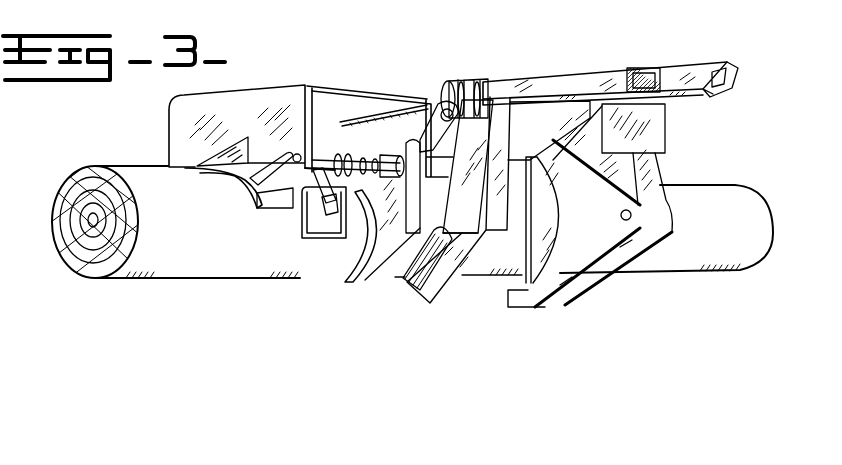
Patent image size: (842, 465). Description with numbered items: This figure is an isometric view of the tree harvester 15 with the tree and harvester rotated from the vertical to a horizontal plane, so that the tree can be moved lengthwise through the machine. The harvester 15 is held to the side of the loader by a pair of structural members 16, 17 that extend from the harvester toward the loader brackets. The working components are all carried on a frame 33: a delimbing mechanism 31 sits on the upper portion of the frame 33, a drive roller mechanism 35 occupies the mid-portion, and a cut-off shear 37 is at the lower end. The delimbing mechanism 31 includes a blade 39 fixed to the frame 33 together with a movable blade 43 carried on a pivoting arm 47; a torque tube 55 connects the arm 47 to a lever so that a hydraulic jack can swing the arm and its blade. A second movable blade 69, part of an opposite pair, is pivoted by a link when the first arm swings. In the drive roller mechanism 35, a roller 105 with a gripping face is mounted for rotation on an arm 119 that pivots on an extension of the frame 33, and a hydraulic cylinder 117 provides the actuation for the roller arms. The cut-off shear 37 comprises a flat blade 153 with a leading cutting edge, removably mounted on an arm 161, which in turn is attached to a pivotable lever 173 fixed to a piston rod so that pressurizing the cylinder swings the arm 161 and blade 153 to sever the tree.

The tree harvester 15 is at (373, 62).
The structural member 16 is at (585, 75).
The structural member 17 is at (693, 73).
The delimbing mechanism 31 is at (345, 307).
The frame 33 is at (262, 97).
The drive roller mechanism 35 is at (426, 322).
The cut-off shear 37 is at (603, 254).
The blade 39 is at (237, 176).
The movable blade 43 is at (362, 242).
The arm 47 is at (356, 283).
The torque tube 55 is at (403, 142).
The movable blade 69 is at (323, 205).
The roller 105 is at (406, 284).
The hydraulic cylinder 117 is at (421, 97).
The arm 119 is at (443, 302).
The blade 153 is at (548, 212).
The arm 161 is at (575, 268).
The pivotable lever 173 is at (652, 173).